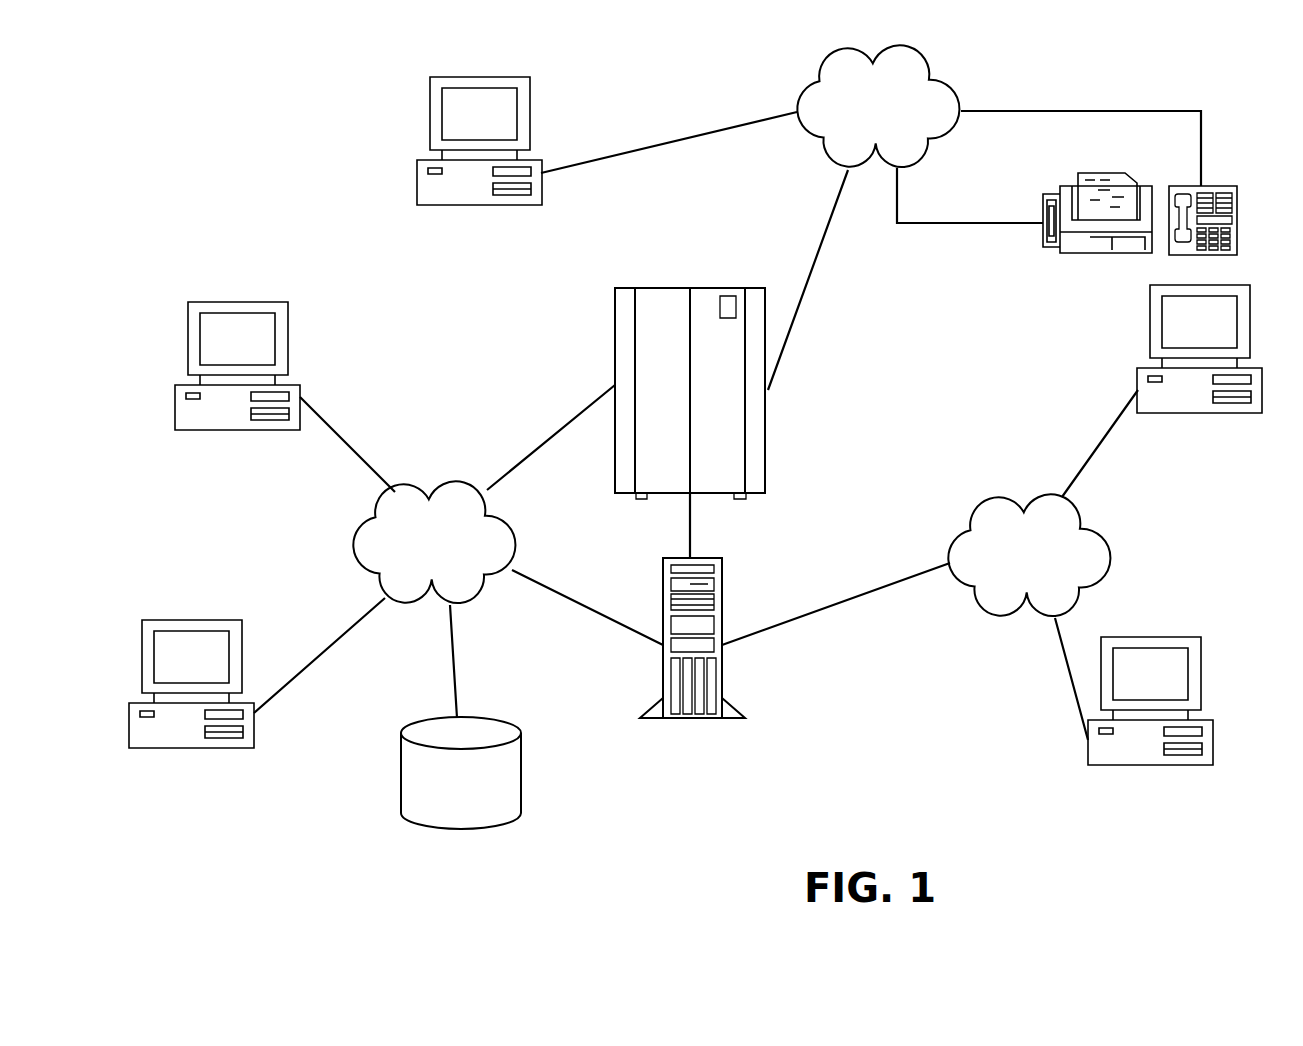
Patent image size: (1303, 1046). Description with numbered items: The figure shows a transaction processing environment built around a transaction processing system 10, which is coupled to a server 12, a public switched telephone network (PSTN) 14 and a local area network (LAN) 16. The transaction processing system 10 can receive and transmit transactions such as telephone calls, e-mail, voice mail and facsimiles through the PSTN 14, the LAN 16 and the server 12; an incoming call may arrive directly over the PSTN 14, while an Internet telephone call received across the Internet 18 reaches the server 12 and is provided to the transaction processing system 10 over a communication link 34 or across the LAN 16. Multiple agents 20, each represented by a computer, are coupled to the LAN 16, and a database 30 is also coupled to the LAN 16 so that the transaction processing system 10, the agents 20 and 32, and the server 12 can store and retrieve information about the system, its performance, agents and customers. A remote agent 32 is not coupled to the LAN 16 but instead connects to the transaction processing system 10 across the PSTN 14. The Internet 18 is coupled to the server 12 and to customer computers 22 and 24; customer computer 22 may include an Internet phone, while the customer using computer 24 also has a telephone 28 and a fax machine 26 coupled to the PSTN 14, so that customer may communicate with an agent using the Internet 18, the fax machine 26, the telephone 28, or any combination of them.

The transaction processing system 10 is at (615, 298).
The server 12 is at (710, 637).
The public switched telephone network (PSTN) 14 is at (801, 137).
The local area network (LAN) 16 is at (509, 520).
The Internet 18 is at (986, 612).
The agent 20 is at (299, 385).
The customer computer 22 is at (1088, 765).
The customer computer 24 is at (1138, 376).
The fax machine 26 is at (1043, 248).
The telephone 28 is at (1238, 193).
The database 30 is at (521, 755).
The agent 32 is at (530, 112).
The communication link 34 is at (690, 545).